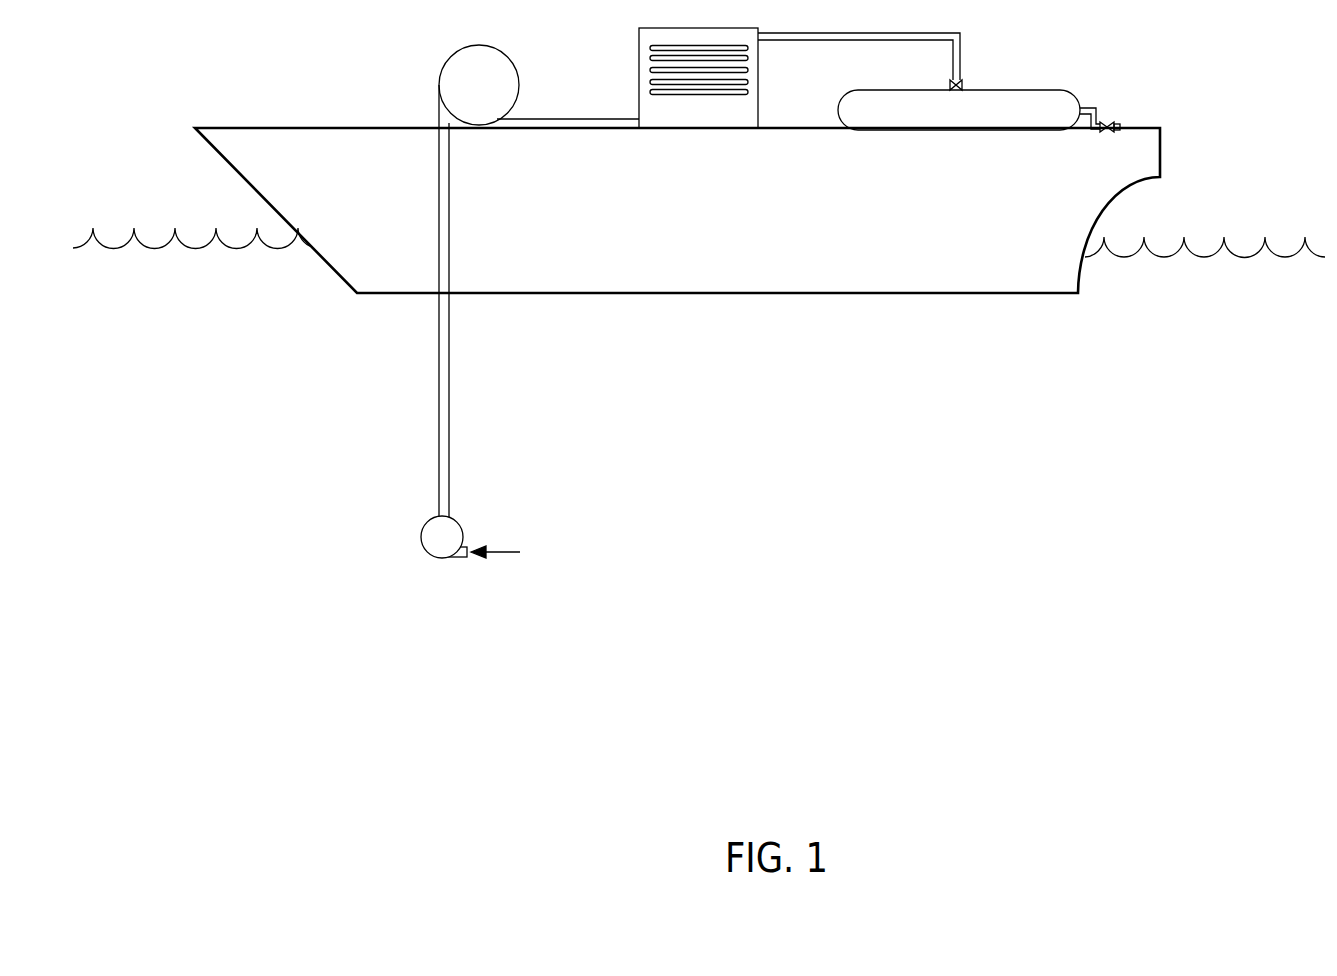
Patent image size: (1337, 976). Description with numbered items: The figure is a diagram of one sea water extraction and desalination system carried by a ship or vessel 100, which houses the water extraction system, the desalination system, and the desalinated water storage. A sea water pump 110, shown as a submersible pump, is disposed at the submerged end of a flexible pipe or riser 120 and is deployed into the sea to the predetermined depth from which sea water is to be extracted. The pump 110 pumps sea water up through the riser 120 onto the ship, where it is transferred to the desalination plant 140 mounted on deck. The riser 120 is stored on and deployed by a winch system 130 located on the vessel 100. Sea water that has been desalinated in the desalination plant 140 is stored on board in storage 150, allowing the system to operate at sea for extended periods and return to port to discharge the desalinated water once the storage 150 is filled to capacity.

The ship or vessel 100 is at (1028, 226).
The sea water pump 110 is at (423, 537).
The flexible pipe or riser 120 is at (437, 342).
The winch system 130 is at (498, 99).
The desalination plant 140 is at (718, 124).
The storage 150 is at (978, 124).